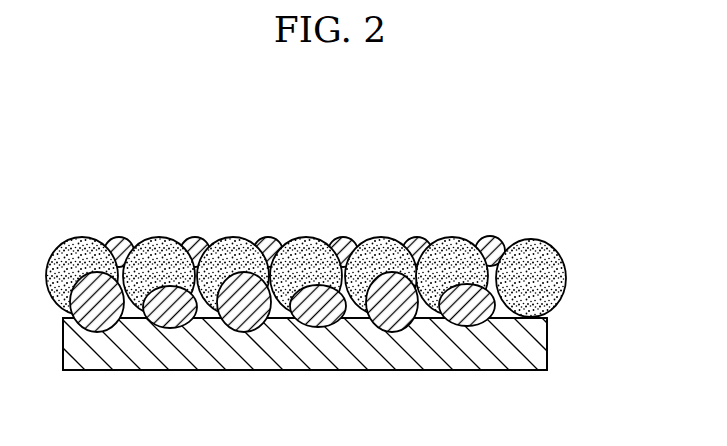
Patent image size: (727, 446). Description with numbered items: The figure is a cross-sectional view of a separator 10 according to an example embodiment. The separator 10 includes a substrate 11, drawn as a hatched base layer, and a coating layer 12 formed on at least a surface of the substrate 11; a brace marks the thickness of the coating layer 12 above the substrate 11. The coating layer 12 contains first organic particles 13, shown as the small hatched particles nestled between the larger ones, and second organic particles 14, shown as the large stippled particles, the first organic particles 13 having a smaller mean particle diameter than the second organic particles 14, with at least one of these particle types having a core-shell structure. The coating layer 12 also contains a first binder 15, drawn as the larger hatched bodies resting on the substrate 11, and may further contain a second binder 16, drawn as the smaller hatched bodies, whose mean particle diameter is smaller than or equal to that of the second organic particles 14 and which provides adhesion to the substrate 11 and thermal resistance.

The separator 10 is at (318, 150).
The substrate 11 is at (548, 345).
The coating layer 12 is at (334, 236).
The first organic particles 13 is at (490, 236).
The second organic particles 14 is at (533, 240).
The first binder 15 is at (393, 328).
The second binder 16 is at (468, 324).